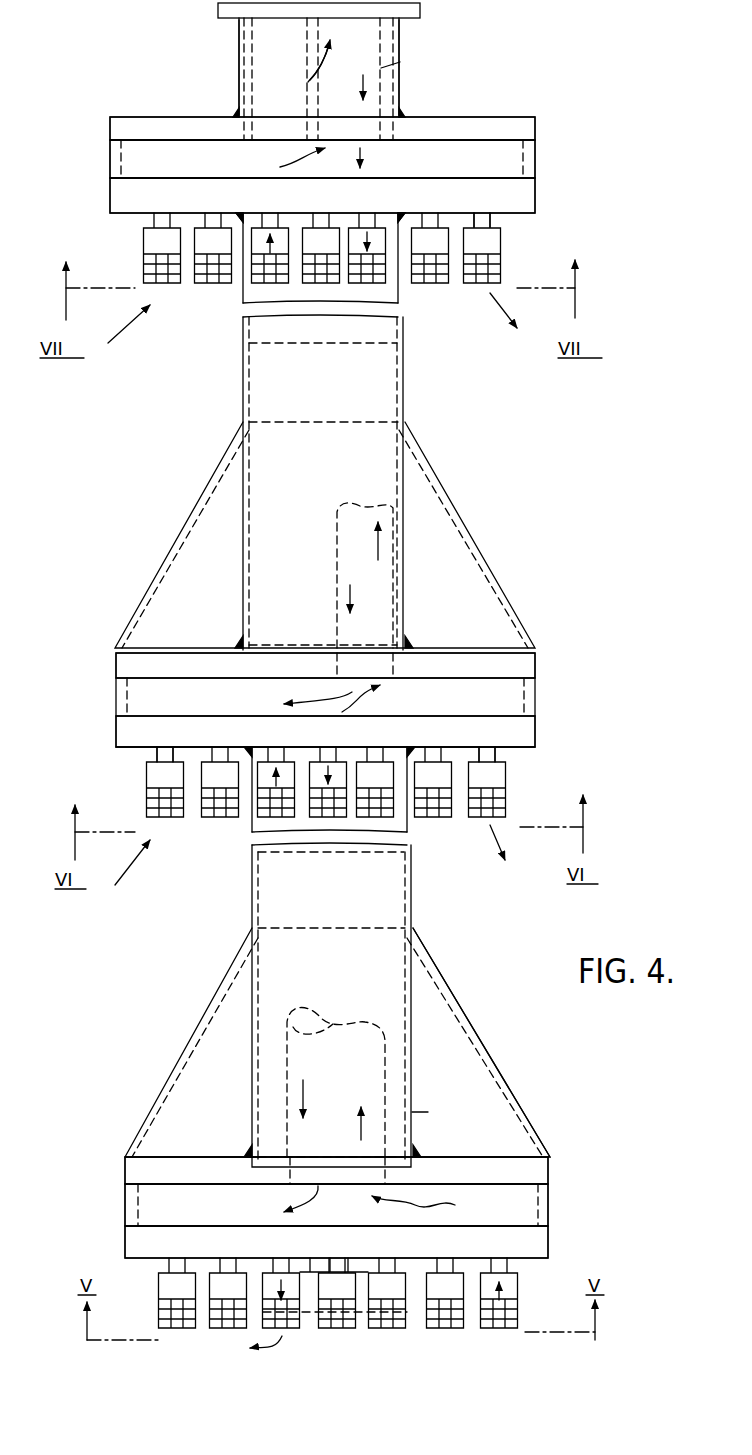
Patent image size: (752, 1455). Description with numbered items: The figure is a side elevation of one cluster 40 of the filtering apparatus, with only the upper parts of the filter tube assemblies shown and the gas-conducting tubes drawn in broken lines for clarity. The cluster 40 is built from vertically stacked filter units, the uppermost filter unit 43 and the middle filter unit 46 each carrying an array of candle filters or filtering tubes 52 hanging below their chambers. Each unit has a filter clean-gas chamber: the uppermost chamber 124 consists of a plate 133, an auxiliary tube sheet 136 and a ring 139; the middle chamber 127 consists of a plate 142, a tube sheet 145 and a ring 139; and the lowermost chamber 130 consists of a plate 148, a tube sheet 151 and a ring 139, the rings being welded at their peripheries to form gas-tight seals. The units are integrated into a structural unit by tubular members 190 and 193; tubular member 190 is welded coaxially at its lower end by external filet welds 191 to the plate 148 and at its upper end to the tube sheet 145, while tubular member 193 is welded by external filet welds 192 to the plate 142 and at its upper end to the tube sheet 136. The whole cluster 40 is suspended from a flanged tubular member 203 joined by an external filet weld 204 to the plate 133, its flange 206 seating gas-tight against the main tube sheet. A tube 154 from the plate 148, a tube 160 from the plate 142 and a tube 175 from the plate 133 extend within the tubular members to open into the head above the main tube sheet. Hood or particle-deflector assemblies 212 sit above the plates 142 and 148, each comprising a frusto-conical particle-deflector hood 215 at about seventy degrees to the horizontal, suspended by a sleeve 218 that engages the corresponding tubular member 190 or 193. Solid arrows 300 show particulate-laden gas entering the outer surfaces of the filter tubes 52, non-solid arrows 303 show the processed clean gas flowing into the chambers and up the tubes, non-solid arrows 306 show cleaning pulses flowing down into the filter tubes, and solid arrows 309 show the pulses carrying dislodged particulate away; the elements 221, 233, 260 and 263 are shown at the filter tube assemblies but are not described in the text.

The cluster 40 is at (488, 406).
The uppermost filter unit 43 is at (455, 260).
The middle filter unit 46 is at (514, 775).
The filtering tubes 52 is at (173, 283).
The uppermost filter clean-gas chamber 124 is at (531, 116).
The middle filter clean-gas chamber 127 is at (541, 645).
The lowermost filter clean-gas chamber 130 is at (551, 1154).
The plate 133 is at (145, 130).
The tube sheet 136 is at (122, 192).
The ring 139 is at (122, 160).
The plate 142 is at (130, 663).
The tube sheet 145 is at (130, 735).
The plate 148 is at (130, 1172).
The tube sheet 151 is at (540, 1240).
The tube 154 is at (407, 1060).
The tube 160 is at (395, 556).
The tube 175 is at (414, 62).
The tubular member 190 is at (415, 856).
The external filet welds 191 is at (411, 749).
The external filet welds 192 is at (404, 212).
The tubular member 193 is at (400, 322).
The flanged tubular member 203 is at (401, 77).
The external filet weld 204 is at (238, 110).
The flange 206 is at (421, 9).
The hood or particle-deflector assembly 212 is at (413, 423).
The particle-deflector hood 215 is at (490, 1050).
The sleeve 218 is at (243, 396).
The lower nozzle assemblies 221 is at (157, 1290).
The nozzle element 233 is at (507, 792).
The nozzle connector 260 is at (520, 752).
The nozzle connector 263 is at (495, 212).
The solid arrows 300 is at (128, 872).
The non-solid arrows 303 is at (311, 80).
The non-solid arrows 306 is at (340, 597).
The solid arrows 309 is at (522, 842).